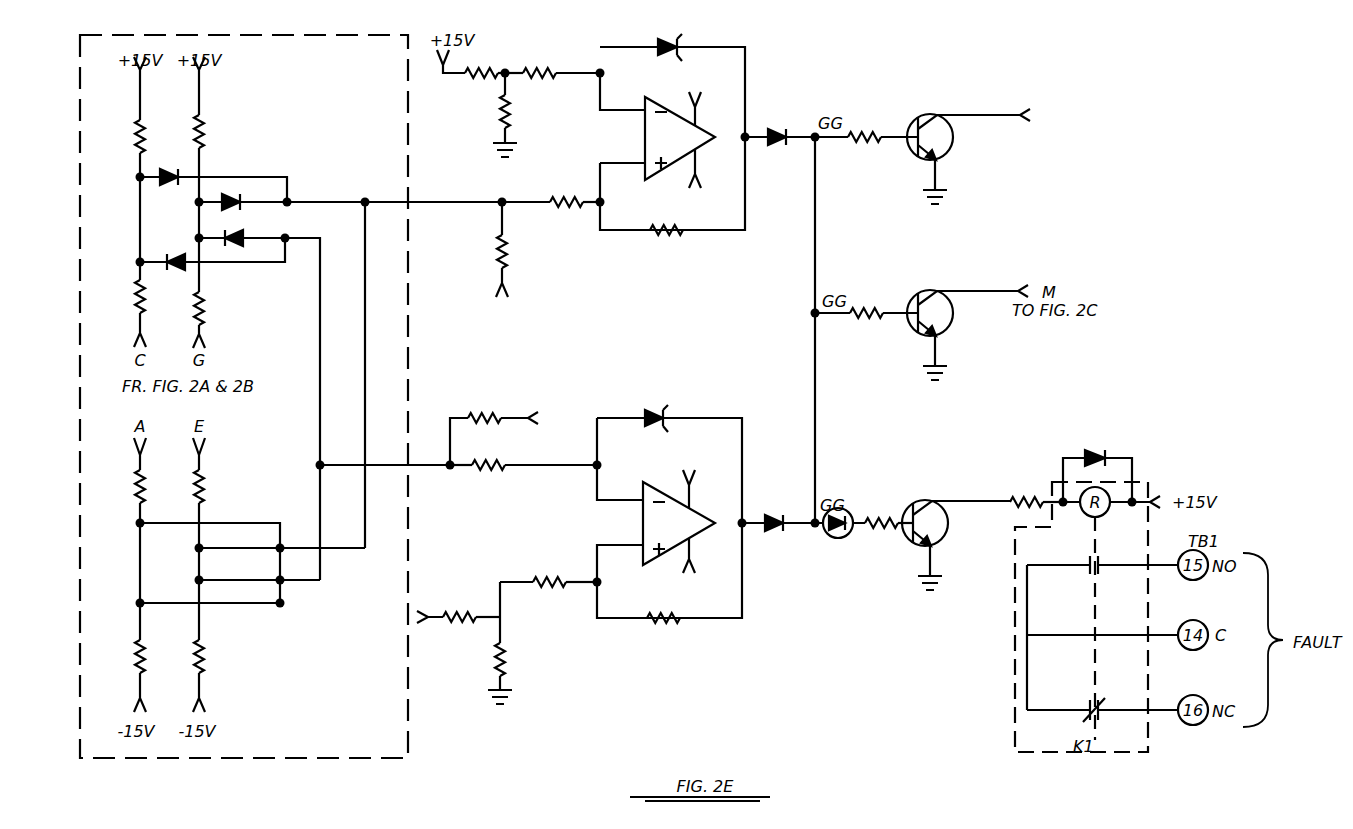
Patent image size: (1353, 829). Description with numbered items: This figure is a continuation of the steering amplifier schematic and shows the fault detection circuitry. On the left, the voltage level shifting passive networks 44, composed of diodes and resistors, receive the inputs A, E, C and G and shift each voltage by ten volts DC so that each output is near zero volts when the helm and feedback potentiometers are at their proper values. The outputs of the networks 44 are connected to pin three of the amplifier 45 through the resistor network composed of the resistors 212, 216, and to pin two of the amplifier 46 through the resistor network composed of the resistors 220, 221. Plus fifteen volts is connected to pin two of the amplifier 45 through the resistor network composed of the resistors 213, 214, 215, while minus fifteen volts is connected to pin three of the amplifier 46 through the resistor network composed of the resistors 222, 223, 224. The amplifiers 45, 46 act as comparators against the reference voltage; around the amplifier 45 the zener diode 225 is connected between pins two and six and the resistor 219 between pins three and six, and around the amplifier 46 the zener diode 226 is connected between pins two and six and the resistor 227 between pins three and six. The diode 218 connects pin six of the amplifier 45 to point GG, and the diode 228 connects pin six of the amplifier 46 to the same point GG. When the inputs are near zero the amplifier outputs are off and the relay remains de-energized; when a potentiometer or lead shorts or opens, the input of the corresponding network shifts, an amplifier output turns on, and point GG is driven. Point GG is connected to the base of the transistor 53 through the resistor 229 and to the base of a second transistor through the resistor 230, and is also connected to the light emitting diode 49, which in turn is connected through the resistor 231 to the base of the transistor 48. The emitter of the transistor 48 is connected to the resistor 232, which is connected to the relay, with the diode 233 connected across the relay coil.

The voltage level shifting passive networks 44 is at (272, 42).
The amplifier 45 is at (662, 176).
The amplifier 46 is at (665, 562).
The transistor 48 is at (927, 500).
The light emitting diode 49 is at (835, 540).
The transistor 53 is at (940, 118).
The resistor 212 is at (556, 198).
The resistor 213 is at (474, 70).
The resistor 214 is at (532, 68).
The resistor 215 is at (510, 118).
The resistor 216 is at (509, 250).
The diode 218 is at (777, 128).
The resistor 219 is at (664, 238).
The resistor 220 is at (478, 412).
The resistor 221 is at (478, 460).
The resistor 222 is at (446, 612).
The resistor 223 is at (566, 578).
The resistor 224 is at (507, 665).
The zener diode 225 is at (665, 42).
The zener diode 226 is at (654, 412).
The resistor 227 is at (653, 625).
The diode 228 is at (770, 532).
The resistor 229 is at (858, 128).
The resistor 230 is at (860, 306).
The resistor 231 is at (870, 510).
The resistor 232 is at (1008, 492).
The diode 233 is at (1106, 455).